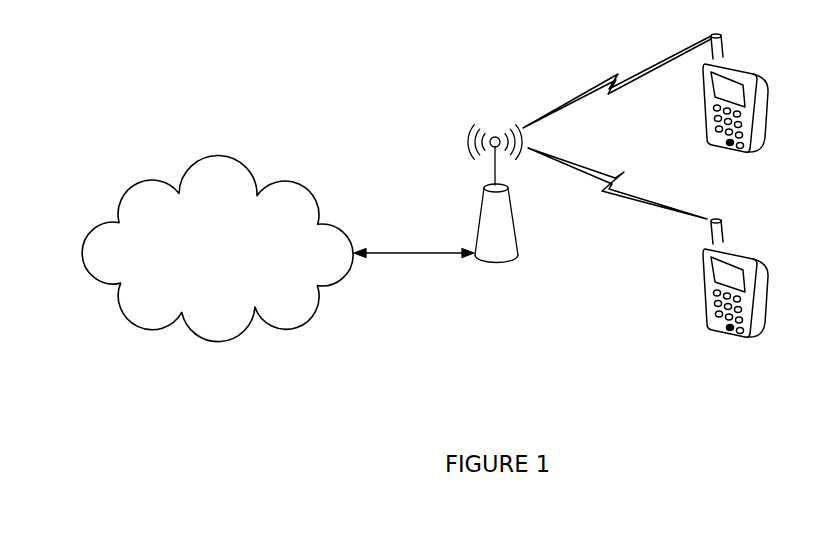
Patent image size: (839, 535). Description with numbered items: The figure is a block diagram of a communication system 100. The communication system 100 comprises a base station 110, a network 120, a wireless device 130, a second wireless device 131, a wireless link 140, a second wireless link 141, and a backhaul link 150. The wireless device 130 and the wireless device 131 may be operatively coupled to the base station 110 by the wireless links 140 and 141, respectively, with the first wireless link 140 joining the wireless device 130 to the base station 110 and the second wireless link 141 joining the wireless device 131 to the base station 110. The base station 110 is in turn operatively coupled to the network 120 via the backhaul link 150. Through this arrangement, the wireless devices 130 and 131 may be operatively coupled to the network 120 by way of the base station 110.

The communication system 100 is at (136, 41).
The base station 110 is at (510, 262).
The network 120 is at (238, 272).
The wireless device 130 is at (752, 156).
The wireless device 131 is at (752, 338).
The wireless link 140 is at (611, 91).
The wireless link 141 is at (610, 175).
The backhaul link 150 is at (432, 250).